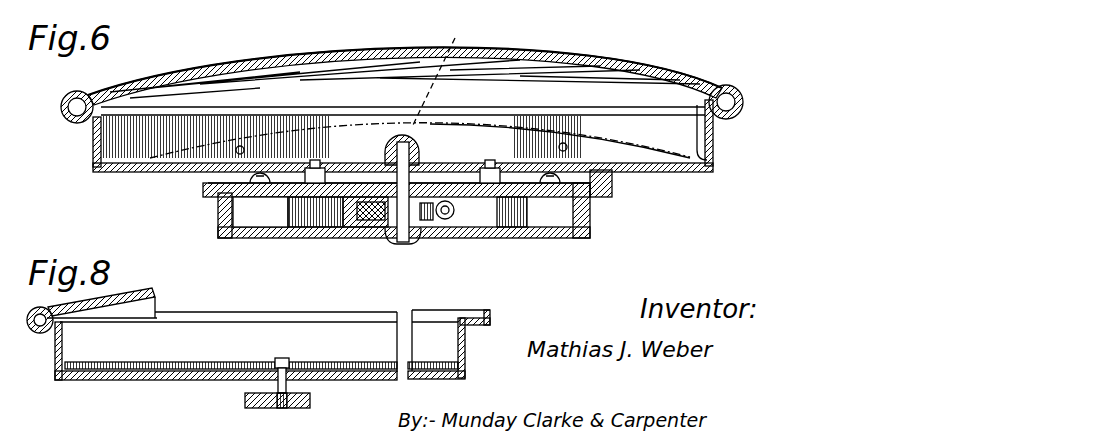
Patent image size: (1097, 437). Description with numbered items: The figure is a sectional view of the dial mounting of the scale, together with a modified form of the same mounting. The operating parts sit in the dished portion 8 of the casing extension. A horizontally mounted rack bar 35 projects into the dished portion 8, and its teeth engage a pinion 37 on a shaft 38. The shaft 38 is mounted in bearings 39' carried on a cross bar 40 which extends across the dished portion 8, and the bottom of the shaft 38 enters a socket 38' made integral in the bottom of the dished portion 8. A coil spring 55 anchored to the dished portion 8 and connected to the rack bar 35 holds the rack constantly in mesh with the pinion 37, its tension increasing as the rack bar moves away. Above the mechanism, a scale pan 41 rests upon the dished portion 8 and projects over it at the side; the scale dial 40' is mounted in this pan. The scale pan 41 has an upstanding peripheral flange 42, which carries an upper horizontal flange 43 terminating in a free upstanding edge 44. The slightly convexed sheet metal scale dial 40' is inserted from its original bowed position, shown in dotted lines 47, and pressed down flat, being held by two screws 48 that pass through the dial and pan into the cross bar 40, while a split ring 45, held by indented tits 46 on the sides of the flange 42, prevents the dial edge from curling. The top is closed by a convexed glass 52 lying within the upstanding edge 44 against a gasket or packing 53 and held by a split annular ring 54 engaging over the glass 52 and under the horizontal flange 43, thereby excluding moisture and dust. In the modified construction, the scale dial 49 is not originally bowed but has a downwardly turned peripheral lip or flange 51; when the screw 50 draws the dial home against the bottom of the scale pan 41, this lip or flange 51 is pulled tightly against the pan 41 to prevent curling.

In FIG. 6, the dished portion 8 is at (614, 193).
In FIG. 6, the rack bar 35 is at (360, 230).
In FIG. 6, the pinion 37 is at (435, 218).
In FIG. 6, the shaft 38 is at (426, 183).
In FIG. 6, the socket 38' is at (403, 252).
In FIG. 6, the bearings 39' is at (381, 155).
In FIG. 6, the cross bar 40 is at (407, 228).
In FIG. 6, the scale dial 40' is at (413, 113).
In FIG. 6, the scale pan 41 is at (712, 165).
In FIG. 8, the scale pan 41 is at (230, 380).
In FIG. 6, the upstanding peripheral flange 42 is at (722, 137).
In FIG. 6, the upper horizontal flange 43 is at (745, 100).
In FIG. 6, the free upstanding edge 44 is at (732, 92).
In FIG. 6, the split ring 45 is at (690, 150).
In FIG. 6, the indented tits 46 is at (93, 155).
In FIG. 6, the original bowed position 47 is at (443, 70).
In FIG. 6, the screws 48 is at (317, 163).
In FIG. 8, the scale dial 49 is at (212, 363).
In FIG. 8, the screw 50 is at (288, 360).
In FIG. 8, the lip or flange 51 is at (462, 372).
In FIG. 6, the convexed glass 52 is at (200, 78).
In FIG. 8, the convexed glass 52 is at (145, 293).
In FIG. 6, the gasket or packing 53 is at (75, 122).
In FIG. 8, the gasket or packing 53 is at (38, 332).
In FIG. 6, the split annular ring 54 is at (62, 105).
In FIG. 8, the split annular ring 54 is at (40, 308).
In FIG. 6, the coil spring 55 is at (453, 217).